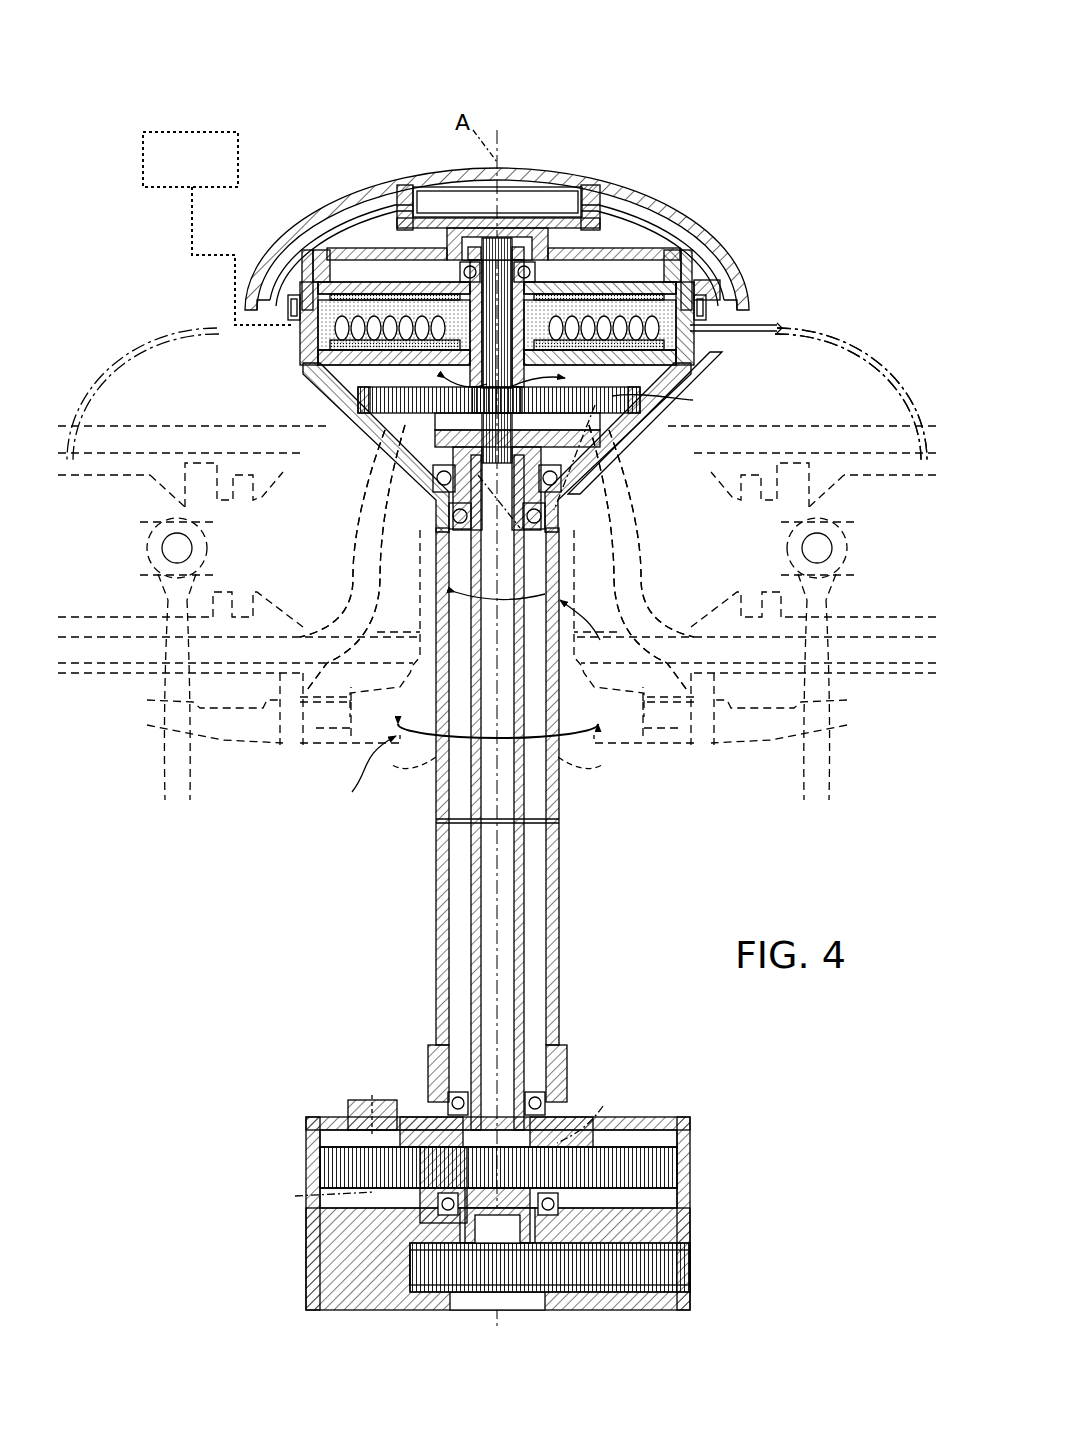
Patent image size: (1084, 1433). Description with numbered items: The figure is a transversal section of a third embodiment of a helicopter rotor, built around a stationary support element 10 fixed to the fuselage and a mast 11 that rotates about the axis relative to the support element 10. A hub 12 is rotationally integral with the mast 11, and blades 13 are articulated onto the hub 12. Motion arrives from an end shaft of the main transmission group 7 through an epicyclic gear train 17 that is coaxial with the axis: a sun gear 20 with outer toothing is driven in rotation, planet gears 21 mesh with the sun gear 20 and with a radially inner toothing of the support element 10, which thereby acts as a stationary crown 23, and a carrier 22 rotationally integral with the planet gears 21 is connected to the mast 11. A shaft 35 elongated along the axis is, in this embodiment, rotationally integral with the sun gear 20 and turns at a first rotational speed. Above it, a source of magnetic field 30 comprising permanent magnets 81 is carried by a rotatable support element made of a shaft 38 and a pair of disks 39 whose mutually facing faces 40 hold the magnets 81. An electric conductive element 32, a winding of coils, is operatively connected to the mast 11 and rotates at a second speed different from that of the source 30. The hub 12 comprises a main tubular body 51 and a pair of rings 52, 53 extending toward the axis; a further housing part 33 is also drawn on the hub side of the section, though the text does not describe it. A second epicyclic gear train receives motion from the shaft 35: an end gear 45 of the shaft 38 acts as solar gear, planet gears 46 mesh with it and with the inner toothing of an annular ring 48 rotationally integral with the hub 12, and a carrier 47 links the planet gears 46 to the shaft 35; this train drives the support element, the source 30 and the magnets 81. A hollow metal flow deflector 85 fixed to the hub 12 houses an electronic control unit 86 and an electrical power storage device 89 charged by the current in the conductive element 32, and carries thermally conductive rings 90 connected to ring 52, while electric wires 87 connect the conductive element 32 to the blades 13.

The main transmission group 7 is at (522, 1217).
The support element 10 is at (557, 1310).
The mast 11 is at (553, 883).
The hub 12 is at (722, 372).
The blades 13 is at (92, 715).
The epicyclic gear train 17 is at (686, 1137).
The sun gear 20 is at (443, 1185).
The planet gears 21 is at (590, 1163).
The carrier 22 is at (348, 1117).
The stationary crown 23 is at (686, 1166).
The source of magnetic field 30 is at (530, 297).
The electric conductive element 32 is at (355, 400).
The housing section 33 is at (635, 455).
The shaft 35 is at (522, 840).
The shaft 38 is at (490, 270).
The disks 39 is at (355, 286).
The faces 40 is at (740, 286).
The end gear 45 is at (503, 398).
The planet gears 46 is at (400, 432).
The carrier 47 is at (562, 442).
The annular ring 48 is at (392, 420).
The main tubular body 51 is at (672, 410).
The ring 52 is at (392, 255).
The ring 53 is at (323, 362).
The permanent magnets 81 is at (668, 298).
The flow deflector 85 is at (732, 228).
The electronic control unit 86 is at (563, 193).
The electric wires 87 is at (875, 357).
The electrical power storage device 89 is at (182, 150).
The thermally conductive rings 90 is at (312, 255).